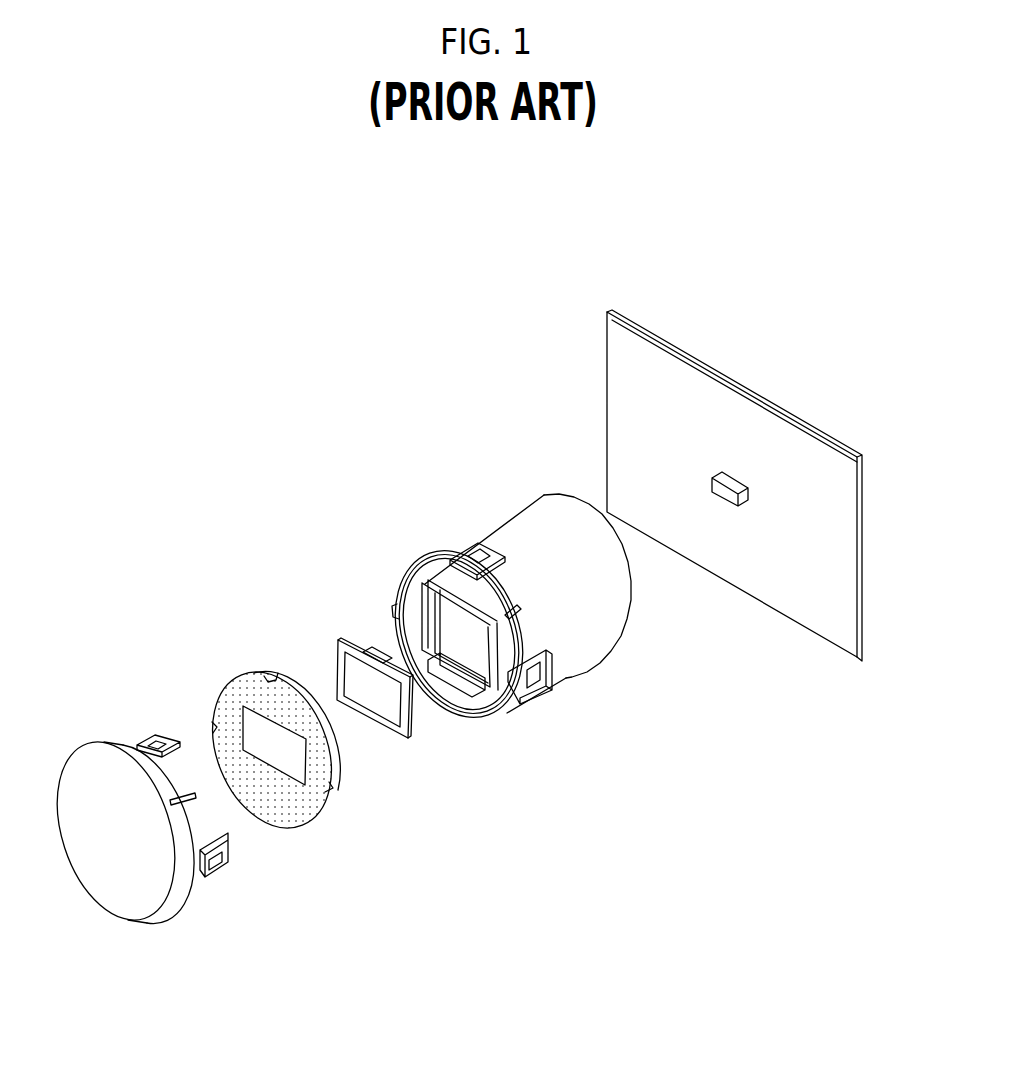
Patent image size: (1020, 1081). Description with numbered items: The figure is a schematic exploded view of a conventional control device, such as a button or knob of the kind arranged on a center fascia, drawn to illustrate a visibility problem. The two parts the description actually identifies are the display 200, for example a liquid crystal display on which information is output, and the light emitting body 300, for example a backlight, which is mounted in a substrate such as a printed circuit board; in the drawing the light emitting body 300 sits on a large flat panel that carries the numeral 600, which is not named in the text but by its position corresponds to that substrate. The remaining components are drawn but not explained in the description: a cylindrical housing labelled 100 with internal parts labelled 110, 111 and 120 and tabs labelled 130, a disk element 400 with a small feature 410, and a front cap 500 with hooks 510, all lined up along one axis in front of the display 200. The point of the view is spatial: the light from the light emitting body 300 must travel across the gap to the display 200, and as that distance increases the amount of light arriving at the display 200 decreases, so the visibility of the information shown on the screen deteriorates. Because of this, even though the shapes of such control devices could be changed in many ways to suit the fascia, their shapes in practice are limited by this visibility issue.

The lens holder body 100 is at (493, 616).
The frame 110 is at (478, 697).
The ring grooves 111 is at (427, 578).
The bracket 120 is at (465, 660).
The fastening tabs 130 is at (473, 562).
The display 200 is at (340, 643).
The light emitting body 300 is at (728, 505).
The diffuser disk 400 is at (317, 775).
The notch 410 is at (270, 680).
The cap 500 is at (169, 866).
The cap hooks 510 is at (220, 870).
The substrate 600 is at (813, 613).